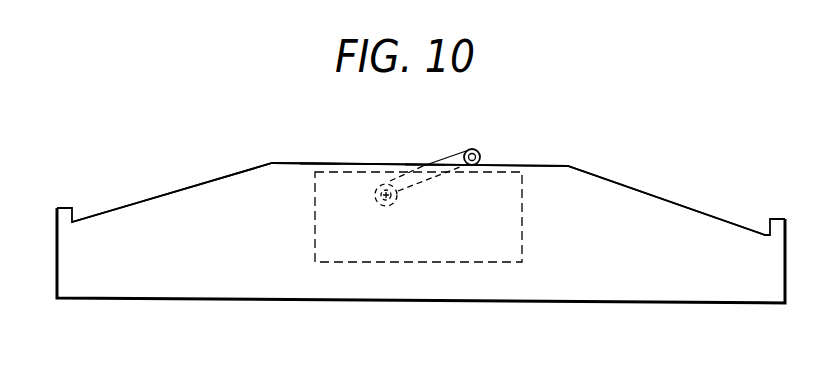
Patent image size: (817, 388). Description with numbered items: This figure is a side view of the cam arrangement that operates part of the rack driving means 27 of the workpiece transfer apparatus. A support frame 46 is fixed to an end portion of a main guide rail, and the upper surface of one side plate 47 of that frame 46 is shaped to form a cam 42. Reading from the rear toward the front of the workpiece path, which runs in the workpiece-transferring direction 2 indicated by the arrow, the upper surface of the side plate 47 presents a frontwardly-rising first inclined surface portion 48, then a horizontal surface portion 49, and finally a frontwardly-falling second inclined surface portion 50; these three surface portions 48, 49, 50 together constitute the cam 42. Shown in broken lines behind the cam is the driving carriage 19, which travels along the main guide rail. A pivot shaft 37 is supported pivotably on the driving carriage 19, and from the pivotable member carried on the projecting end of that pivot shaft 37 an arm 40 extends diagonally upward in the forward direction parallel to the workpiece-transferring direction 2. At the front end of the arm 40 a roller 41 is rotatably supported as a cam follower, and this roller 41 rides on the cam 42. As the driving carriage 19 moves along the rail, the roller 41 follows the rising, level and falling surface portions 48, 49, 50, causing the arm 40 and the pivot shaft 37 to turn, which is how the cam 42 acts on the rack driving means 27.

The workpiece-transferring direction 2 is at (622, 122).
The driving carriage 19 is at (315, 232).
The rack driving means 27 is at (424, 157).
The pivot shaft 37 is at (382, 206).
The arm 40 is at (420, 183).
The roller 41 is at (479, 152).
The cam 42 is at (322, 162).
The support frame 46 is at (243, 300).
The side plate 47 is at (137, 213).
The first inclined surface portion 48 is at (207, 182).
The horizontal surface portion 49 is at (364, 166).
The second inclined surface portion 50 is at (652, 195).